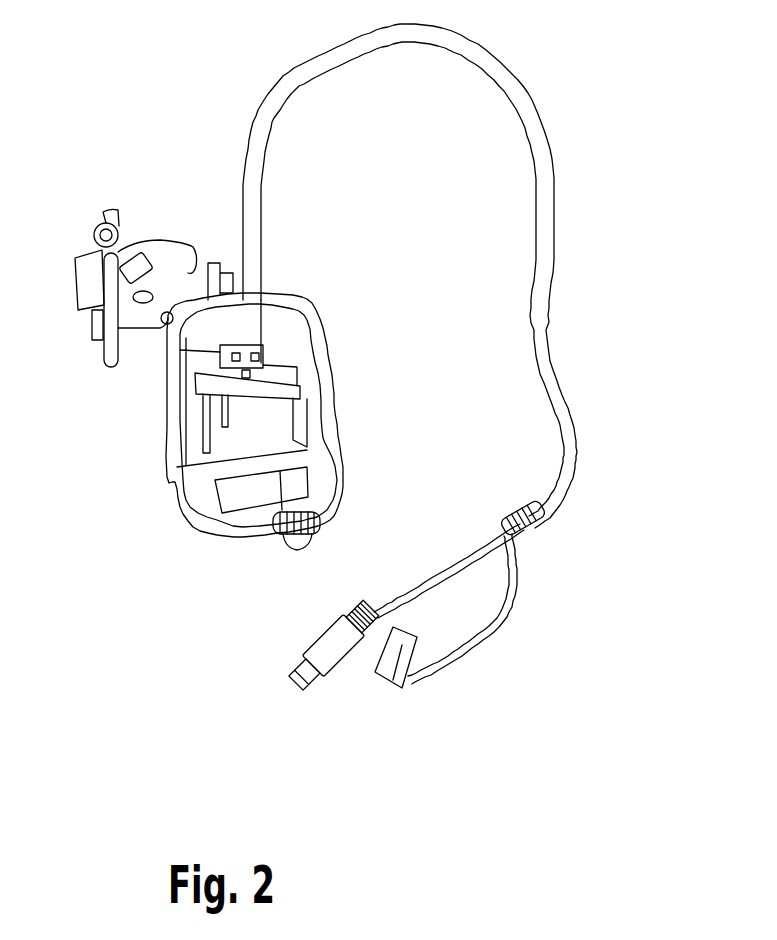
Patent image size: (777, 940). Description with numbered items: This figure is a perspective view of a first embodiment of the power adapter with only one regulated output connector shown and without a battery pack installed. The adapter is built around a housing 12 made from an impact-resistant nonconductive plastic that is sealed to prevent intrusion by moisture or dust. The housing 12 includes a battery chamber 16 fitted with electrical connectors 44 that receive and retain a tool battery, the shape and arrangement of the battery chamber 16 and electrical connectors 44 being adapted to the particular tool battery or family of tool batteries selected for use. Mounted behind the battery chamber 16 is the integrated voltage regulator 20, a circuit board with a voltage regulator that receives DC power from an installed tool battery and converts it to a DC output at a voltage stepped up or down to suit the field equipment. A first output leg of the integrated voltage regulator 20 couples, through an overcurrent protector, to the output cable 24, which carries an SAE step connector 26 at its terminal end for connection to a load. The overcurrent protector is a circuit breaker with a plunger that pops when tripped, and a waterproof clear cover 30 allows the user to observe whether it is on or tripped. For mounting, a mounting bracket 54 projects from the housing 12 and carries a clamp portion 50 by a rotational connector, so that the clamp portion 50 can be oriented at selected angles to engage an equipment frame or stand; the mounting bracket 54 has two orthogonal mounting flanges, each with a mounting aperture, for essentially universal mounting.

The housing 12 is at (168, 438).
The battery chamber 16 is at (248, 428).
The integrated voltage regulator 20 is at (268, 363).
The output cable 24 is at (569, 427).
The SAE step connector 26 is at (323, 680).
The waterproof clear cover 30 is at (305, 540).
The electrical connectors 44 is at (317, 420).
The clamp portion 50 is at (140, 247).
The mounting bracket 54 is at (233, 280).